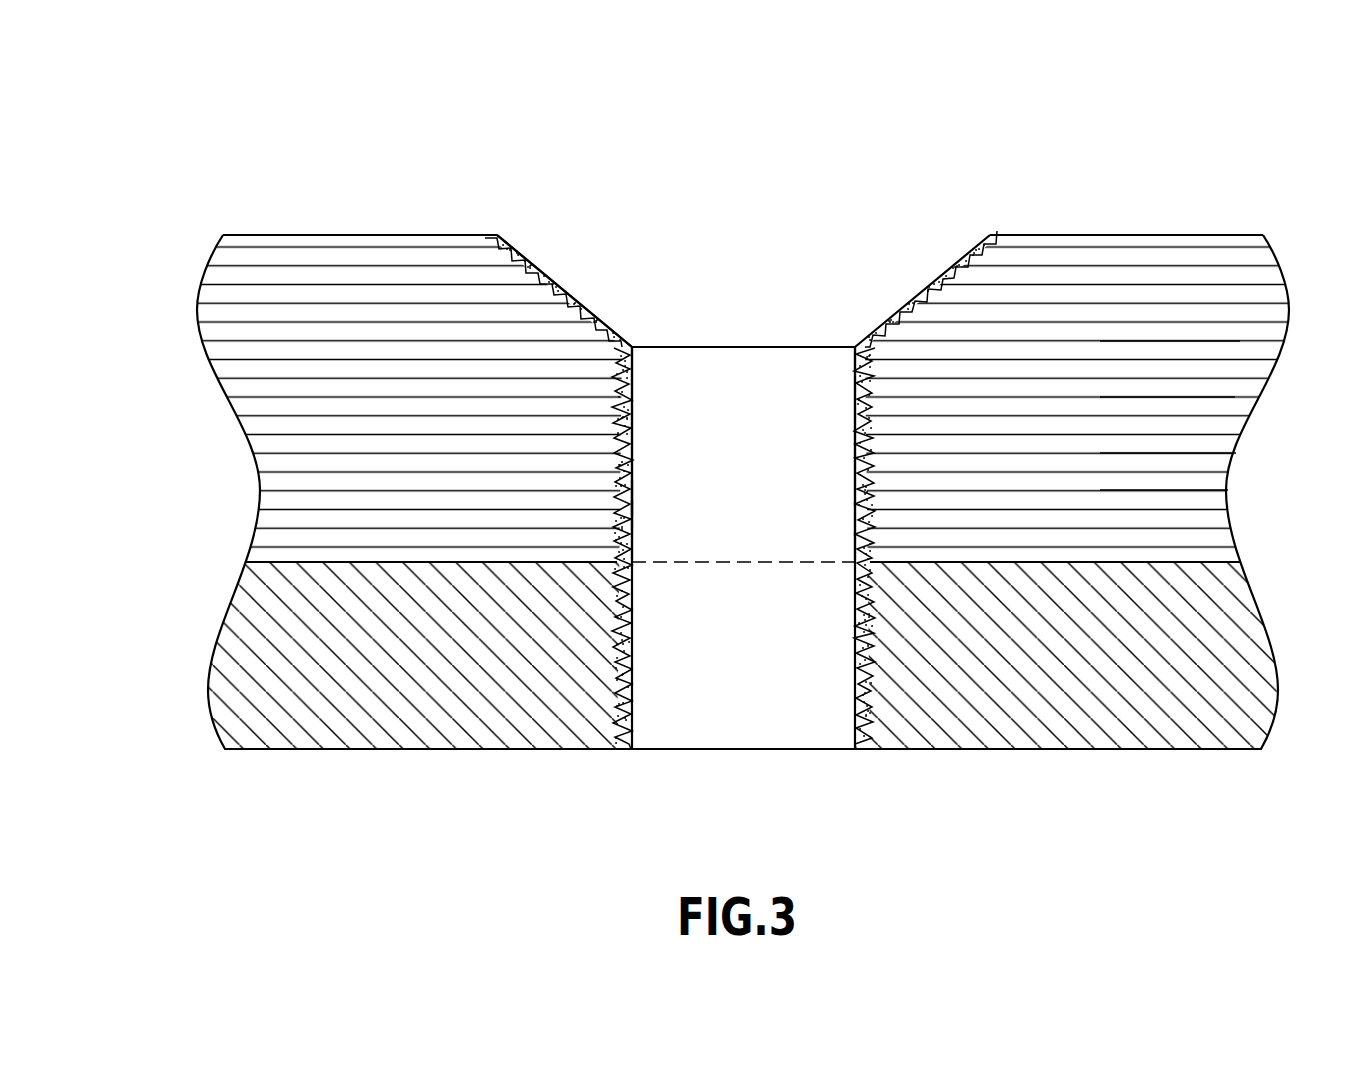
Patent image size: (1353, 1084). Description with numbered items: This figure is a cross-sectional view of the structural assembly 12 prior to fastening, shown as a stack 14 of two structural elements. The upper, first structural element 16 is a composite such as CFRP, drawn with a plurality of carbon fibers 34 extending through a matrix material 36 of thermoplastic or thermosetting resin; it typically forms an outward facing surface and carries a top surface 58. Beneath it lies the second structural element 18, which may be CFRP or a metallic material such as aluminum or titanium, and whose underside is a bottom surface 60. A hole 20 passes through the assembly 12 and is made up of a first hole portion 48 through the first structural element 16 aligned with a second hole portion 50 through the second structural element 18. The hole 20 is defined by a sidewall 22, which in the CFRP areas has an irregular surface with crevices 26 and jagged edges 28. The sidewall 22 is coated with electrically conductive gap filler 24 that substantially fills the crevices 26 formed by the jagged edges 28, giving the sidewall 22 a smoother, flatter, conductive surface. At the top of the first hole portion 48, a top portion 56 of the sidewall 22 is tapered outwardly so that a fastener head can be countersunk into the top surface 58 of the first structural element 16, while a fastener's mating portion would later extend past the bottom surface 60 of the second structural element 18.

The structural assembly 12 is at (305, 160).
The stack 14 is at (163, 223).
The first structural element 16 is at (337, 293).
The second structural element 18 is at (322, 733).
The hole 20 is at (770, 786).
The sidewall 22 is at (630, 443).
The electrically conductive gap filler (CGF) 24 is at (630, 368).
The crevices 26 is at (630, 510).
The jagged edges 28 is at (630, 498).
The carbon fibers 34 is at (1244, 391).
The matrix material 36 is at (1208, 484).
The first hole portion 48 is at (828, 405).
The second hole portion 50 is at (723, 705).
The top portion 56 is at (530, 263).
The top surface 58 is at (1130, 237).
The bottom surface 60 is at (1085, 752).